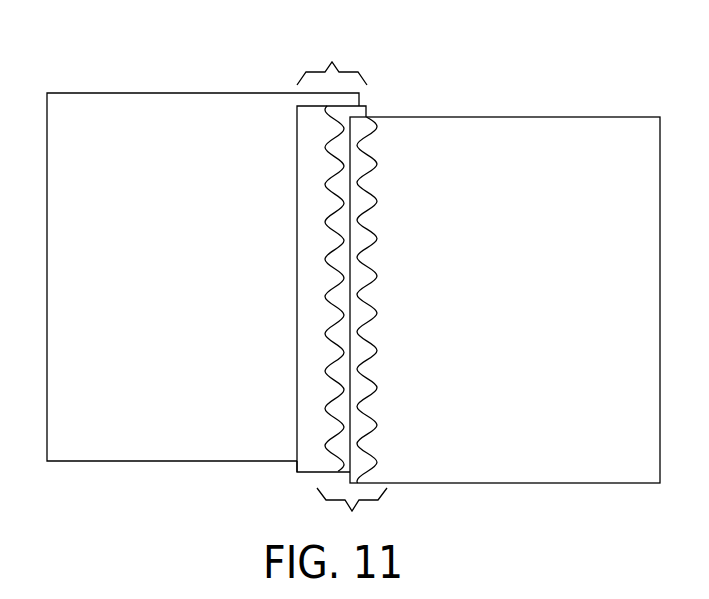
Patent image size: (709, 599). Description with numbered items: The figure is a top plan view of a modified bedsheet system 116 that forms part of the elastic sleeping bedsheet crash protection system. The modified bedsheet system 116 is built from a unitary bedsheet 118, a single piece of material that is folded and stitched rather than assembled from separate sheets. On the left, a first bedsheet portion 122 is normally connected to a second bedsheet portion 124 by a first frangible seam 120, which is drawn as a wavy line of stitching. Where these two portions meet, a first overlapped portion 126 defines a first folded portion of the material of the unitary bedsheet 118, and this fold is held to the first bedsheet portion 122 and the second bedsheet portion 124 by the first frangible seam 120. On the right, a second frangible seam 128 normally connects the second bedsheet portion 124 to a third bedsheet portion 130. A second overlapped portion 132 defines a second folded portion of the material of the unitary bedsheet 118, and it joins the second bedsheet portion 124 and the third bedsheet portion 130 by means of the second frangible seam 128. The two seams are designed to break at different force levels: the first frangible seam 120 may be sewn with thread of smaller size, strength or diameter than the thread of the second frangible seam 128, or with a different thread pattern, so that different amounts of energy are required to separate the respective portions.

The modified bedsheet system 116 is at (511, 69).
The unitary bedsheet 118 is at (423, 99).
The first frangible seam 120 is at (327, 223).
The first bedsheet portion 122 is at (113, 103).
The second bedsheet portion 124 is at (309, 462).
The first overlapped portion 126 is at (332, 61).
The second frangible seam 128 is at (377, 272).
The third bedsheet portion 130 is at (565, 136).
The second overlapped portion 132 is at (352, 514).